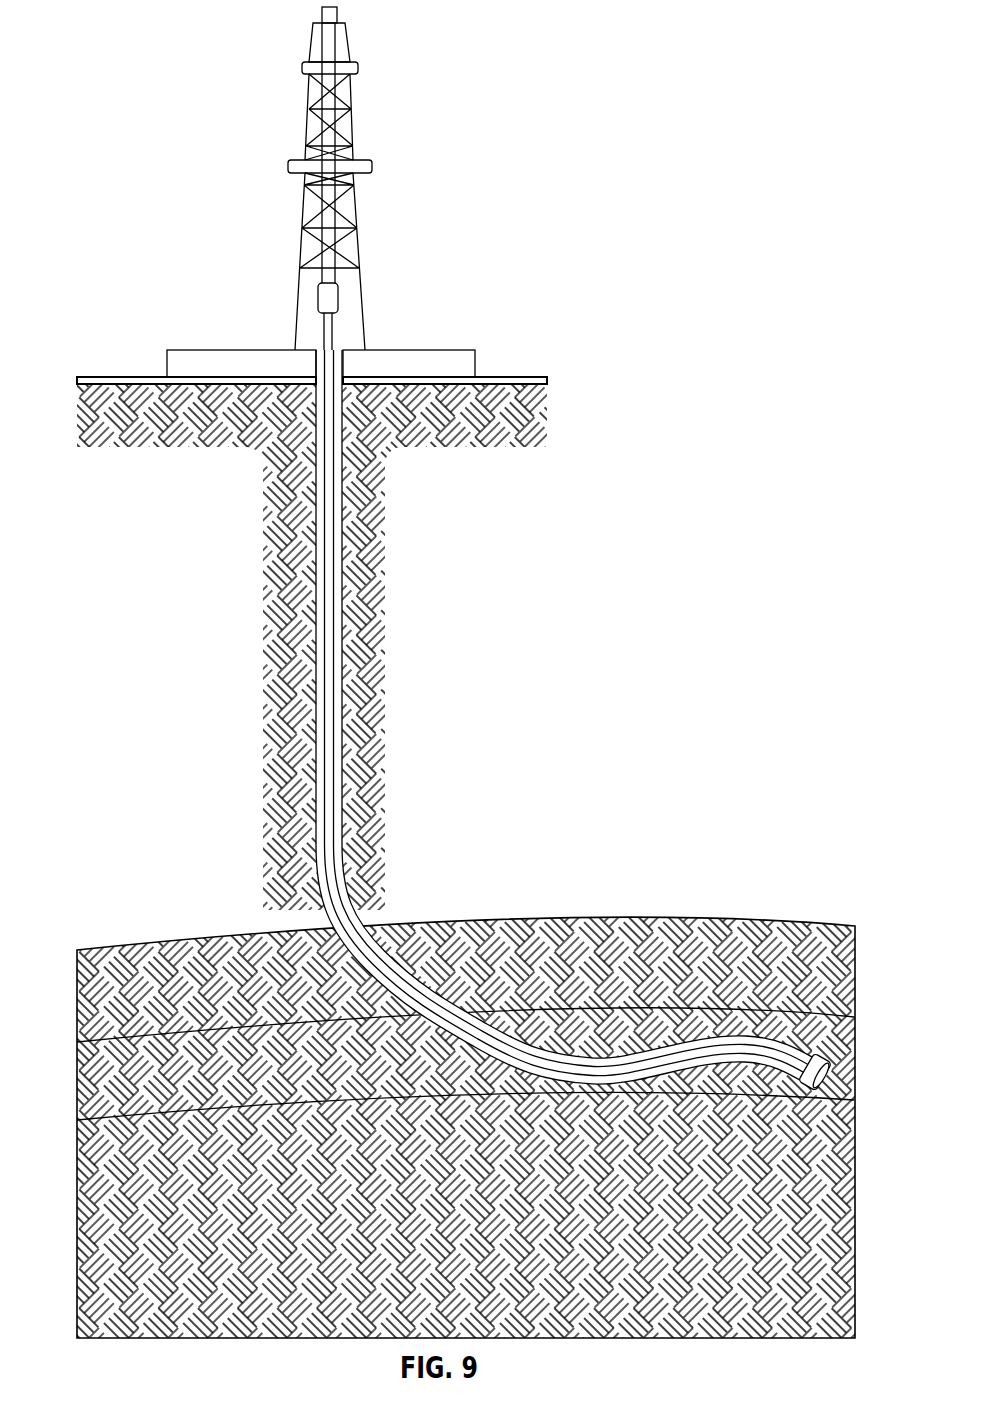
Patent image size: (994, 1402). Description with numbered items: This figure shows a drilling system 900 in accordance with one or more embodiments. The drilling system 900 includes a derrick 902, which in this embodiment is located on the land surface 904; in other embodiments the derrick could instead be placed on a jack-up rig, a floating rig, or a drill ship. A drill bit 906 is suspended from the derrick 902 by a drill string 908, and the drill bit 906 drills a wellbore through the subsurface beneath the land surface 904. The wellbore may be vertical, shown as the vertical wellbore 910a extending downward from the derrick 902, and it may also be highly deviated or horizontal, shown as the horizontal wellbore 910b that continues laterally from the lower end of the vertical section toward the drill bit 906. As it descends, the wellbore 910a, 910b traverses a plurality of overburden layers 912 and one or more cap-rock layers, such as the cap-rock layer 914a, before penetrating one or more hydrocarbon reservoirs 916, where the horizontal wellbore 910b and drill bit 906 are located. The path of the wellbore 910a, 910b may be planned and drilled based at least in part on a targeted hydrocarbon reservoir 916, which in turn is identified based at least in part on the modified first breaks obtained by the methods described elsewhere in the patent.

The drilling system 900 is at (223, 55).
The derrick 902 is at (356, 200).
The land surface 904 is at (509, 377).
The drill bit 906 is at (817, 1053).
The drill string 908 is at (337, 327).
The vertical wellbore 910a is at (314, 587).
The horizontal wellbore 910b is at (487, 1032).
The overburden layers 912 is at (384, 538).
The cap-rock layer 914a is at (110, 962).
The hydrocarbon reservoir 916 is at (87, 1072).